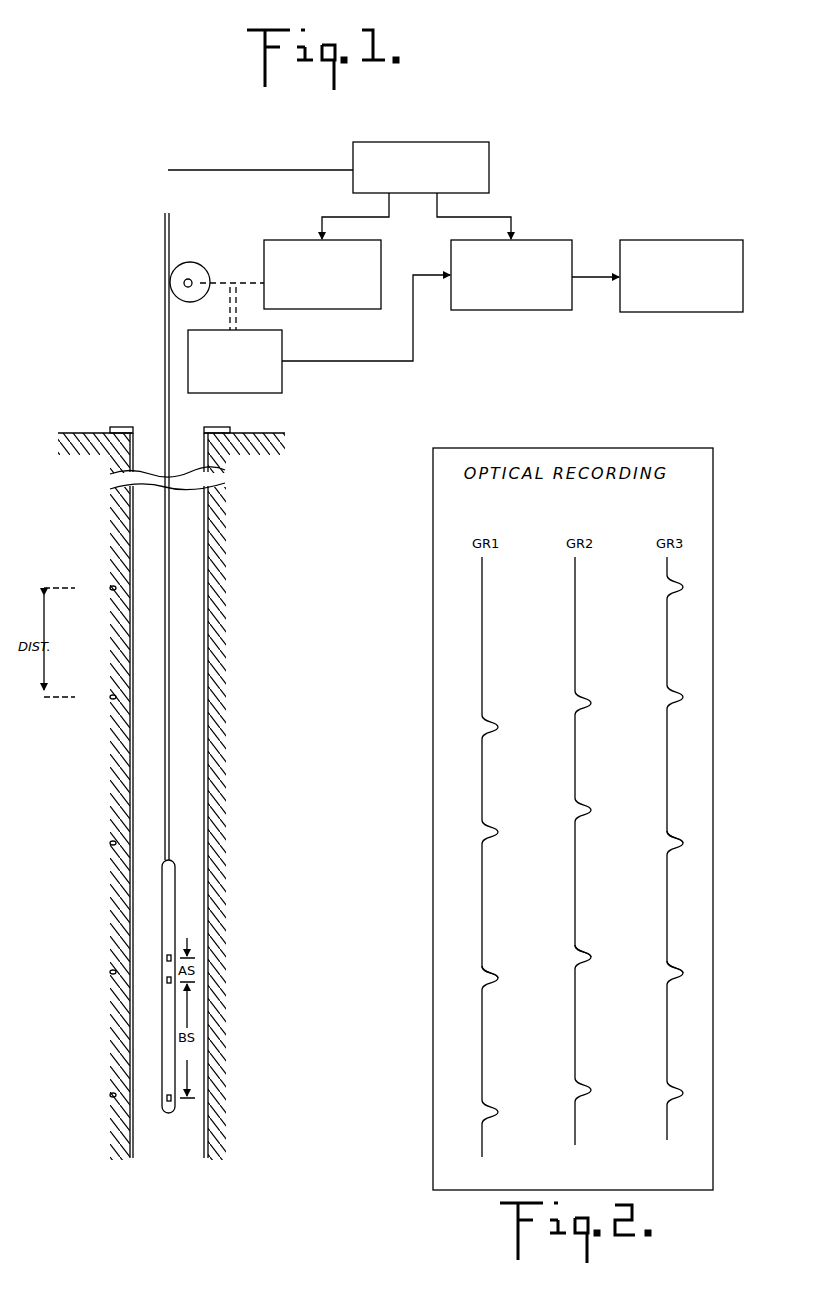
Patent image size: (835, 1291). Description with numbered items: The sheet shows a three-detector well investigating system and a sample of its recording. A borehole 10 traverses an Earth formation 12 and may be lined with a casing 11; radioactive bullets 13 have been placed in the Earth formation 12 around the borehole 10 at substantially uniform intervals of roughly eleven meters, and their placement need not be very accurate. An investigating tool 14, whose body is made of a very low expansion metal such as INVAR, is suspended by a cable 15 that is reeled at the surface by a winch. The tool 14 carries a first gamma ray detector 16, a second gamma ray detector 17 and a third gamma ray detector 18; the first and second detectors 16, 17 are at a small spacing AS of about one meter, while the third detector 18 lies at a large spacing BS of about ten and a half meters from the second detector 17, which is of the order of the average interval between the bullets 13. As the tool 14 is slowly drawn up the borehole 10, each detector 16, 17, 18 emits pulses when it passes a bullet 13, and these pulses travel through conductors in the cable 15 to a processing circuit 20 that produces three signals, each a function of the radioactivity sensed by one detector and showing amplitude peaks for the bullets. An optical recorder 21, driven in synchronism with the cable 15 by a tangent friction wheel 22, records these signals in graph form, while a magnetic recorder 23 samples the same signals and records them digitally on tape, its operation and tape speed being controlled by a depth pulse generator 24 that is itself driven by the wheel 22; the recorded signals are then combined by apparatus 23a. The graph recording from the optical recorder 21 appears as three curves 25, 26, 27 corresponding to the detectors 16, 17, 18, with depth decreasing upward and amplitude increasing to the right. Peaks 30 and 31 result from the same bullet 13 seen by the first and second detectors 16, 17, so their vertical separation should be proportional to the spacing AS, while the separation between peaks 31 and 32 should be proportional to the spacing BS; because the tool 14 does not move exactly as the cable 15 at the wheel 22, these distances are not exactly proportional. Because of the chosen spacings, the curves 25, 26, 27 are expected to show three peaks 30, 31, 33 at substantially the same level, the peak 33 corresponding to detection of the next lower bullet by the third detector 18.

In FIG. 1, the borehole 10 is at (207, 583).
In FIG. 1, the casing 11 is at (207, 633).
In FIG. 1, the Earth formation 12 is at (120, 756).
In FIG. 1, the radioactive bullets 13 is at (111, 970).
In FIG. 1, the investigating tool 14 is at (168, 888).
In FIG. 1, the cable 15 is at (170, 703).
In FIG. 1, the first gamma ray detector 16 is at (171, 957).
In FIG. 1, the second gamma ray detector 17 is at (171, 982).
In FIG. 1, the third gamma ray detector 18 is at (171, 1097).
In FIG. 1, the processing circuit 20 is at (489, 160).
In FIG. 1, the optical recorder 21 is at (381, 246).
In FIG. 1, the tangent friction wheel 22 is at (192, 262).
In FIG. 1, the magnetic recorder 23 is at (572, 245).
In FIG. 1, the combining apparatus 23a is at (693, 240).
In FIG. 1, the depth pulse generator 24 is at (282, 343).
In FIG. 2, the first curve 25 is at (482, 630).
In FIG. 2, the second curve 26 is at (575, 640).
In FIG. 2, the third curve 27 is at (667, 646).
In FIG. 2, the peak 30 is at (492, 972).
In FIG. 2, the peak 31 is at (586, 954).
In FIG. 2, the peak 32 is at (678, 840).
In FIG. 2, the peak 33 is at (678, 968).